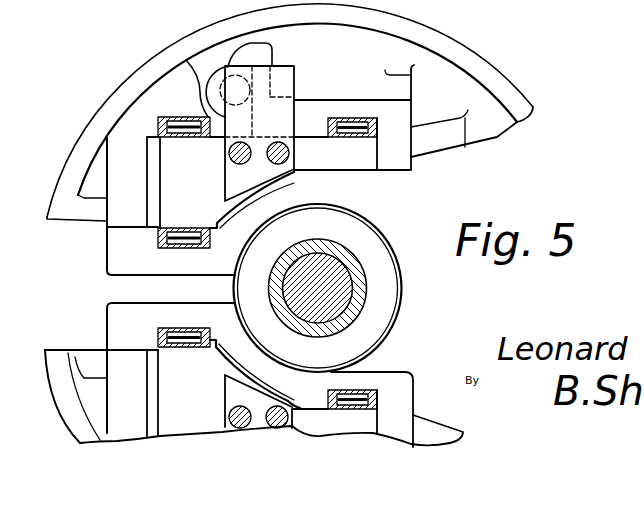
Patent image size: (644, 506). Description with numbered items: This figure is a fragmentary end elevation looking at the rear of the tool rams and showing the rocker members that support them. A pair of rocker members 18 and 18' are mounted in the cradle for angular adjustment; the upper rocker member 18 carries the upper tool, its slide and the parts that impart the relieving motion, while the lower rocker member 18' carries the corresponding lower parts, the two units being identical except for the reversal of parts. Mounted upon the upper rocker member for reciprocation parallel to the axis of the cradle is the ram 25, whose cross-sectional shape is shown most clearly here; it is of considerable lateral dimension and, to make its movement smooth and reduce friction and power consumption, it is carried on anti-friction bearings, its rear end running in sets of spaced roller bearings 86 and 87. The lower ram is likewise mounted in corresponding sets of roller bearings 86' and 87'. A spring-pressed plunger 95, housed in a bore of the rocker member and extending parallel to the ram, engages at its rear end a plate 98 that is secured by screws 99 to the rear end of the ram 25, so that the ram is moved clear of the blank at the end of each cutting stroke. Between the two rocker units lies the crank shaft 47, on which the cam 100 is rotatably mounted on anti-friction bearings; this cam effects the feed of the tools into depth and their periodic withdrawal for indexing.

The rocker member 18 is at (290, 139).
The spring-pressed plunger 95 is at (221, 88).
The plate 98 is at (284, 72).
The ram 25 is at (307, 150).
The roller bearings 87 is at (352, 95).
The roller bearings 86 is at (155, 157).
The screws 99 is at (226, 163).
The crank shaft 47 is at (340, 275).
The cam 100 is at (388, 289).
The rocker member 18' is at (258, 375).
The roller bearings 86' is at (171, 316).
The roller bearings 87' is at (374, 376).